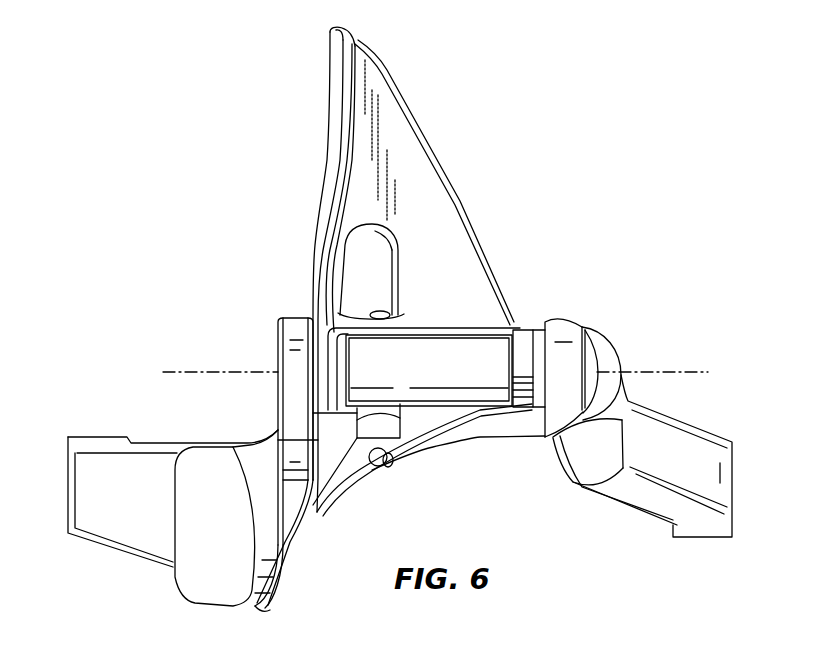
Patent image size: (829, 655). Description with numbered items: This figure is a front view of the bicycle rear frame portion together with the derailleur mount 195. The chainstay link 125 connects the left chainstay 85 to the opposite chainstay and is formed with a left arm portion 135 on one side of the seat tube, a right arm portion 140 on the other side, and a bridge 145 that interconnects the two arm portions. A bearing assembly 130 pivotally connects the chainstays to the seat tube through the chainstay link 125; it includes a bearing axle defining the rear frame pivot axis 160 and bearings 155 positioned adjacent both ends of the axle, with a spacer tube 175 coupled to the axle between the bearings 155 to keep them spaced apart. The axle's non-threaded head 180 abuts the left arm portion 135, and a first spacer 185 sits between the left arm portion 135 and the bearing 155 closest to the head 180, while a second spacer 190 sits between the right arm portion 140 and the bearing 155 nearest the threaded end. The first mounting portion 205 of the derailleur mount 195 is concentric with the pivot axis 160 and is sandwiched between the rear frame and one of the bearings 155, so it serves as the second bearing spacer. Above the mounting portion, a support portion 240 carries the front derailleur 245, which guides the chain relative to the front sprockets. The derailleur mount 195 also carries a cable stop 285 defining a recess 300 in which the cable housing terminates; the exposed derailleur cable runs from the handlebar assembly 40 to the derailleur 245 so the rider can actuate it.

The handlebar assembly 40 is at (92, 520).
The left chainstay 85 is at (680, 445).
The chainstay link 125 is at (210, 583).
The bearing assembly 130 is at (470, 432).
The left arm portion 135 is at (570, 330).
The right arm portion 140 is at (296, 330).
The bridge 145 is at (425, 440).
The bearings 155 is at (520, 345).
The rear frame pivot axis 160 is at (688, 372).
The spacer tube 175 is at (454, 353).
The bearing axle head 180 is at (590, 358).
The first spacer 185 is at (540, 412).
The second spacer 190 is at (222, 473).
The derailleur mount 195 is at (436, 135).
The first mounting portion 205 is at (322, 368).
The support portion 240 is at (335, 48).
The front derailleur 245 is at (390, 465).
The cable stop 285 is at (377, 275).
The recess 300 is at (400, 320).